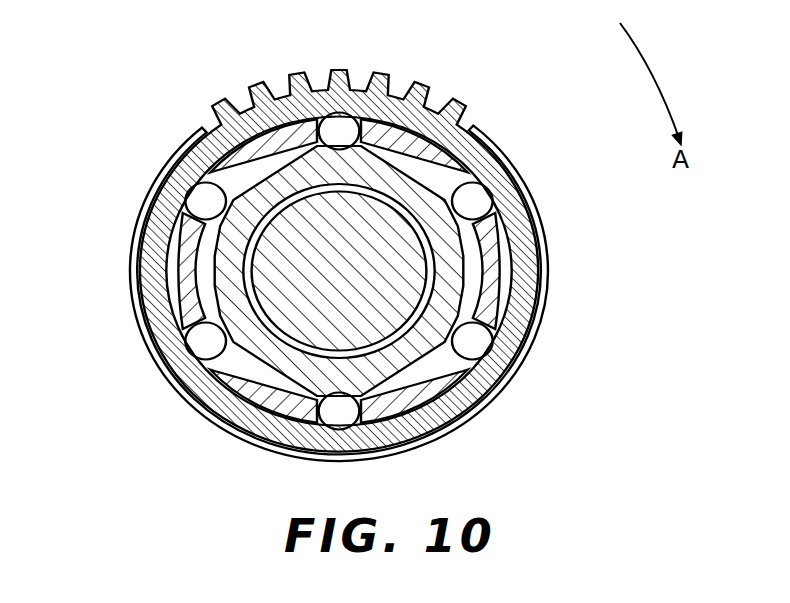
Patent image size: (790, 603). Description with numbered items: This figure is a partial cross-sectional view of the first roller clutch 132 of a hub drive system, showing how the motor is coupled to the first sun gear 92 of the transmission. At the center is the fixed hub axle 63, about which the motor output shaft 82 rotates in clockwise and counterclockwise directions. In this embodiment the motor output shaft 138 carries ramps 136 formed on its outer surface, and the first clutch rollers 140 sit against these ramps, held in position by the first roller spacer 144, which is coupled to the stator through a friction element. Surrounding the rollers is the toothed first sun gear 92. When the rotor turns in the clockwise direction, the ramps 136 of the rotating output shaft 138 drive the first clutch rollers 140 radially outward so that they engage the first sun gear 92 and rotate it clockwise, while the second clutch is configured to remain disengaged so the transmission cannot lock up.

The first roller clutch 132 is at (339, 246).
The first sun gear 92 is at (470, 113).
The output shaft 82 is at (457, 390).
The output shaft 138 is at (455, 249).
The hub axle 63 is at (405, 287).
The ramps 136 is at (391, 122).
The first roller spacer 144 is at (165, 259).
The first clutch rollers 140 is at (473, 200).